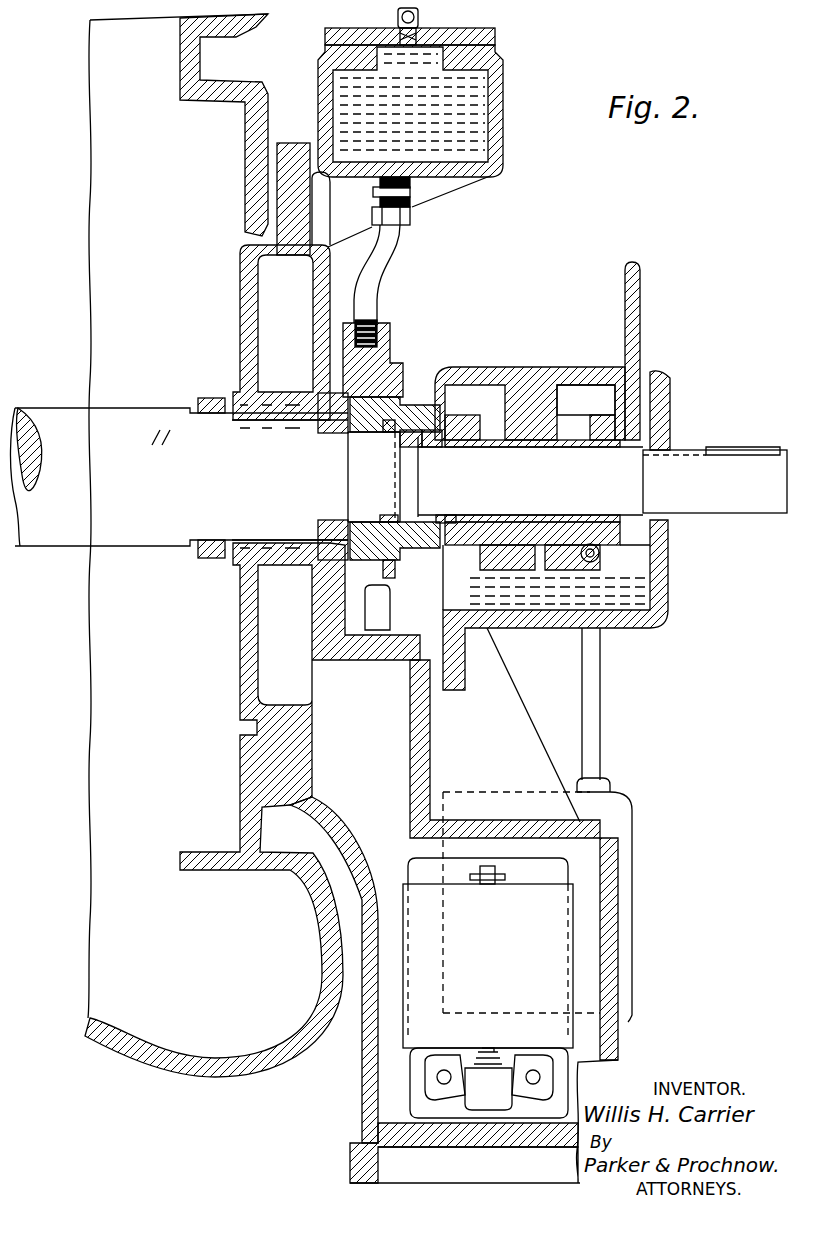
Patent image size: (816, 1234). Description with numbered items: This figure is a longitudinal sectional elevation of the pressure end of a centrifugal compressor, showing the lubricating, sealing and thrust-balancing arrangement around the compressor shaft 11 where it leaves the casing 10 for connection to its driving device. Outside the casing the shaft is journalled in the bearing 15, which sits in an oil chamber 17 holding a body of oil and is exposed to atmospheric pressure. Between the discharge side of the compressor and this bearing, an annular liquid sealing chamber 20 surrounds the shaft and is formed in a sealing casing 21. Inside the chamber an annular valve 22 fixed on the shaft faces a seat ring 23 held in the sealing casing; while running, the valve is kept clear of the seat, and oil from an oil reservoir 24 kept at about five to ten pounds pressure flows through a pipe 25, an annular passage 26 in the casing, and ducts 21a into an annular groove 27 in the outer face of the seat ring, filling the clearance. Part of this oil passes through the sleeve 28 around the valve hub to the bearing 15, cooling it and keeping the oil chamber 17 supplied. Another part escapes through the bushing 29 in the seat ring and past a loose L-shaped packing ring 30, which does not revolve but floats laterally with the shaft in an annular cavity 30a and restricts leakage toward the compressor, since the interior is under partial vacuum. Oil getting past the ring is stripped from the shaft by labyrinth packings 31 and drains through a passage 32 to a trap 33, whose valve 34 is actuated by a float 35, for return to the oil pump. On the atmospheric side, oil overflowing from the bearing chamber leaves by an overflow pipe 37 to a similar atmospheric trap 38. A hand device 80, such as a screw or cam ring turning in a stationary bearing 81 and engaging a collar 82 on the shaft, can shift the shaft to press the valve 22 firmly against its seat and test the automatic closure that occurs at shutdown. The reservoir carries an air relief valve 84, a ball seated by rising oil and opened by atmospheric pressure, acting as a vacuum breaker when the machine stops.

The casing 10 is at (209, 516).
The compressor shaft 11 is at (326, 478).
The bearing 15 is at (538, 382).
The oil chamber 17 is at (586, 400).
The annular liquid sealing chamber 20 is at (413, 403).
The sealing casing 21 is at (379, 607).
The ducts 21a is at (395, 578).
The annular valve 22 is at (440, 458).
The seat ring 23 is at (393, 398).
The oil reservoir 24 is at (503, 122).
The pipe 25 is at (388, 256).
The annular passage 26 is at (350, 397).
The annular groove 27 is at (411, 437).
The sleeve 28 is at (444, 518).
The bushing 29 is at (390, 520).
The loose packing ring 30 is at (362, 520).
The annular cavity 30a is at (345, 433).
The labyrinth packings 31 is at (252, 418).
The passage 32 is at (323, 582).
The trap 33 is at (454, 905).
The valve 34 is at (489, 1083).
The float 35 is at (488, 953).
The overflow pipe 37 is at (593, 683).
The atmospheric trap 38 is at (622, 818).
The hand device 80 is at (641, 312).
The stationary bearing 81 is at (637, 565).
The collar 82 is at (633, 452).
The air relief valve 84 is at (422, 17).